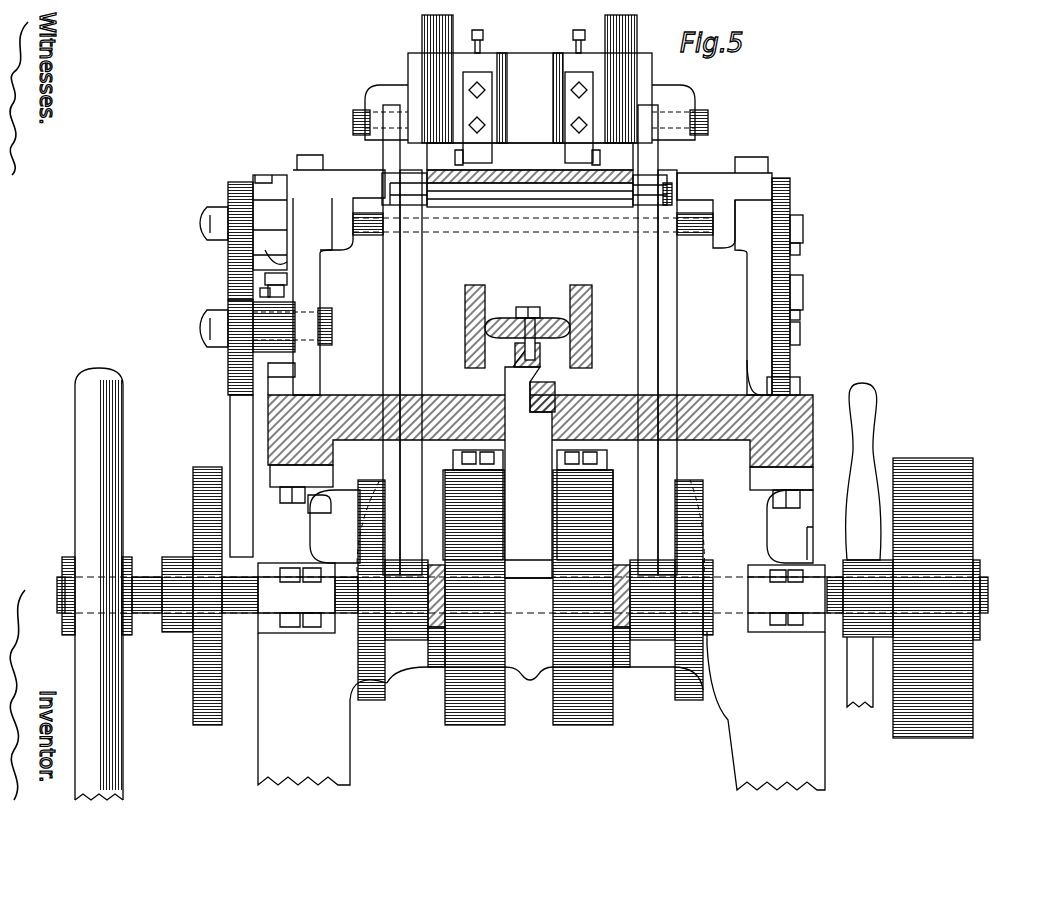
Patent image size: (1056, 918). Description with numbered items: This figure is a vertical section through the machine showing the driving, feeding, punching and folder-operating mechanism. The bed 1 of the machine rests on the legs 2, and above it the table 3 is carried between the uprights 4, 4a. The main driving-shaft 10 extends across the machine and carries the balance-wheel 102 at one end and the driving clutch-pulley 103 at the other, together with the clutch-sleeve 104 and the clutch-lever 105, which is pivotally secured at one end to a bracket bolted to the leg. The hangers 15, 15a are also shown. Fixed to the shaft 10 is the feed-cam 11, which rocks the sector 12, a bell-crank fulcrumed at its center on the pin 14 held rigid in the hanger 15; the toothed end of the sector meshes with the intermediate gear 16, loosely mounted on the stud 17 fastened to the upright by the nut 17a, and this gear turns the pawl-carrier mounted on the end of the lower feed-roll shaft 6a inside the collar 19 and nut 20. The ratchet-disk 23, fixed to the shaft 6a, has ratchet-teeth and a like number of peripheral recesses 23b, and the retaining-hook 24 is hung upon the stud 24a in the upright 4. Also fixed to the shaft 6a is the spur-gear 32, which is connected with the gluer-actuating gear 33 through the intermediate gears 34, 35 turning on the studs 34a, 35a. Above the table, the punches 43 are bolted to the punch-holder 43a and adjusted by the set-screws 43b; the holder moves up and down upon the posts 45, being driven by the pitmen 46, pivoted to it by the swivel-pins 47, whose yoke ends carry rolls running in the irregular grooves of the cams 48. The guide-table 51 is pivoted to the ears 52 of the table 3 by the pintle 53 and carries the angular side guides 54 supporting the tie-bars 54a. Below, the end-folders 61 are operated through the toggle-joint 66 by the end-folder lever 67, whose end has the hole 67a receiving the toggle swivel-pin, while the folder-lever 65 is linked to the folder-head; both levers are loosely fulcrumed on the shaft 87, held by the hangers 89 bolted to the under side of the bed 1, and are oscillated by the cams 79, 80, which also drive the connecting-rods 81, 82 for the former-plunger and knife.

The bed 1 is at (806, 441).
The legs 2 is at (296, 782).
The table 3 is at (762, 192).
The upright 4 is at (320, 382).
The upright 4a is at (745, 372).
The shaft 6a is at (705, 236).
The main driving-shaft 10 is at (57, 593).
The feed-cam 11 is at (205, 727).
The sector 12 is at (230, 432).
The pin 14 is at (320, 500).
The hanger 15 is at (306, 535).
The hanger 15a is at (806, 514).
The intermediate gear 16 is at (228, 367).
The stud 17 is at (332, 320).
The nut 17a is at (216, 343).
The collar 19 is at (230, 200).
The nut 20 is at (207, 218).
The ratchet-disk 23 is at (263, 175).
The peripheral recesses 23b is at (278, 258).
The retaining-hook 24 is at (265, 280).
The stud 24a is at (260, 293).
The spur-gear 32 is at (792, 192).
The gluer-actuating gear 33 is at (802, 333).
The intermediate gear 34 is at (804, 230).
The stud 34a is at (802, 250).
The intermediate gear 35 is at (804, 286).
The stud 35a is at (802, 312).
The punches 43 is at (565, 152).
The punch-holder 43a is at (392, 88).
The set-screws 43b is at (573, 35).
The posts 45 is at (422, 26).
The pitmen 46 is at (638, 265).
The swivel-pins 47 is at (355, 112).
The cams 48 is at (358, 680).
The guide-table 51 is at (445, 176).
The ears 52 is at (663, 182).
The pintle 53 is at (673, 198).
The side guides 54 is at (460, 168).
The tie-bars 54a is at (552, 203).
The end-folders 61 is at (465, 294).
The folder-lever 65 is at (556, 388).
The toggle-joint 66 is at (506, 316).
The end-folder lever 67 is at (503, 379).
The hole 67a is at (532, 357).
The cam 79 is at (585, 727).
The cam 80 is at (472, 727).
The connecting-rod 81 is at (432, 672).
The connecting-rod 82 is at (626, 672).
The shaft 87 is at (617, 463).
The hangers 89 is at (462, 450).
The balance-wheel 102 is at (75, 427).
The driving clutch-pulley 103 is at (973, 470).
The clutch-sleeve 104 is at (886, 568).
The clutch-lever 105 is at (880, 419).